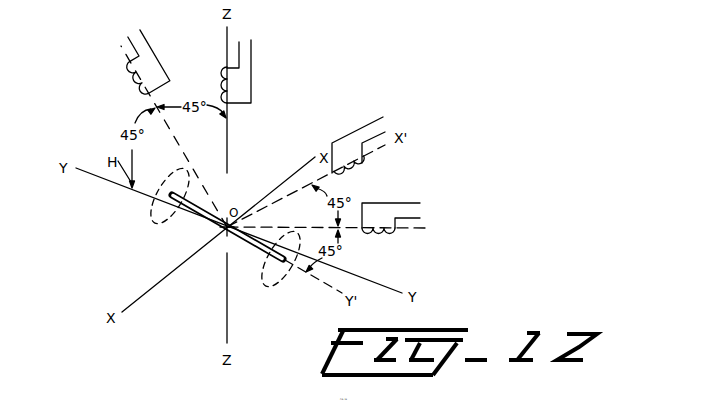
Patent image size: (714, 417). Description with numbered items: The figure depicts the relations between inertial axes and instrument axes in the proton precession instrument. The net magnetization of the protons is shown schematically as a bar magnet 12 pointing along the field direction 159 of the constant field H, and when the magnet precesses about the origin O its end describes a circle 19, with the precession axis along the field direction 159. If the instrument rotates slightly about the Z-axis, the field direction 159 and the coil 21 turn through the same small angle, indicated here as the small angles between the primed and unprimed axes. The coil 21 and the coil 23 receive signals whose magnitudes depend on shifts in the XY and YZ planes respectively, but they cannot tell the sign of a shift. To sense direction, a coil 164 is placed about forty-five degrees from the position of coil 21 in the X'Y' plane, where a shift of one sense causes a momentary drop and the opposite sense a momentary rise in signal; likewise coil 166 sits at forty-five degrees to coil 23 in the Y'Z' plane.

The bar magnet 12 is at (208, 216).
The circle 19 is at (157, 224).
The field direction 159 is at (163, 190).
The coil 21 is at (352, 168).
The coil 23 is at (222, 72).
The coil 164 is at (377, 232).
The coil 166 is at (130, 78).